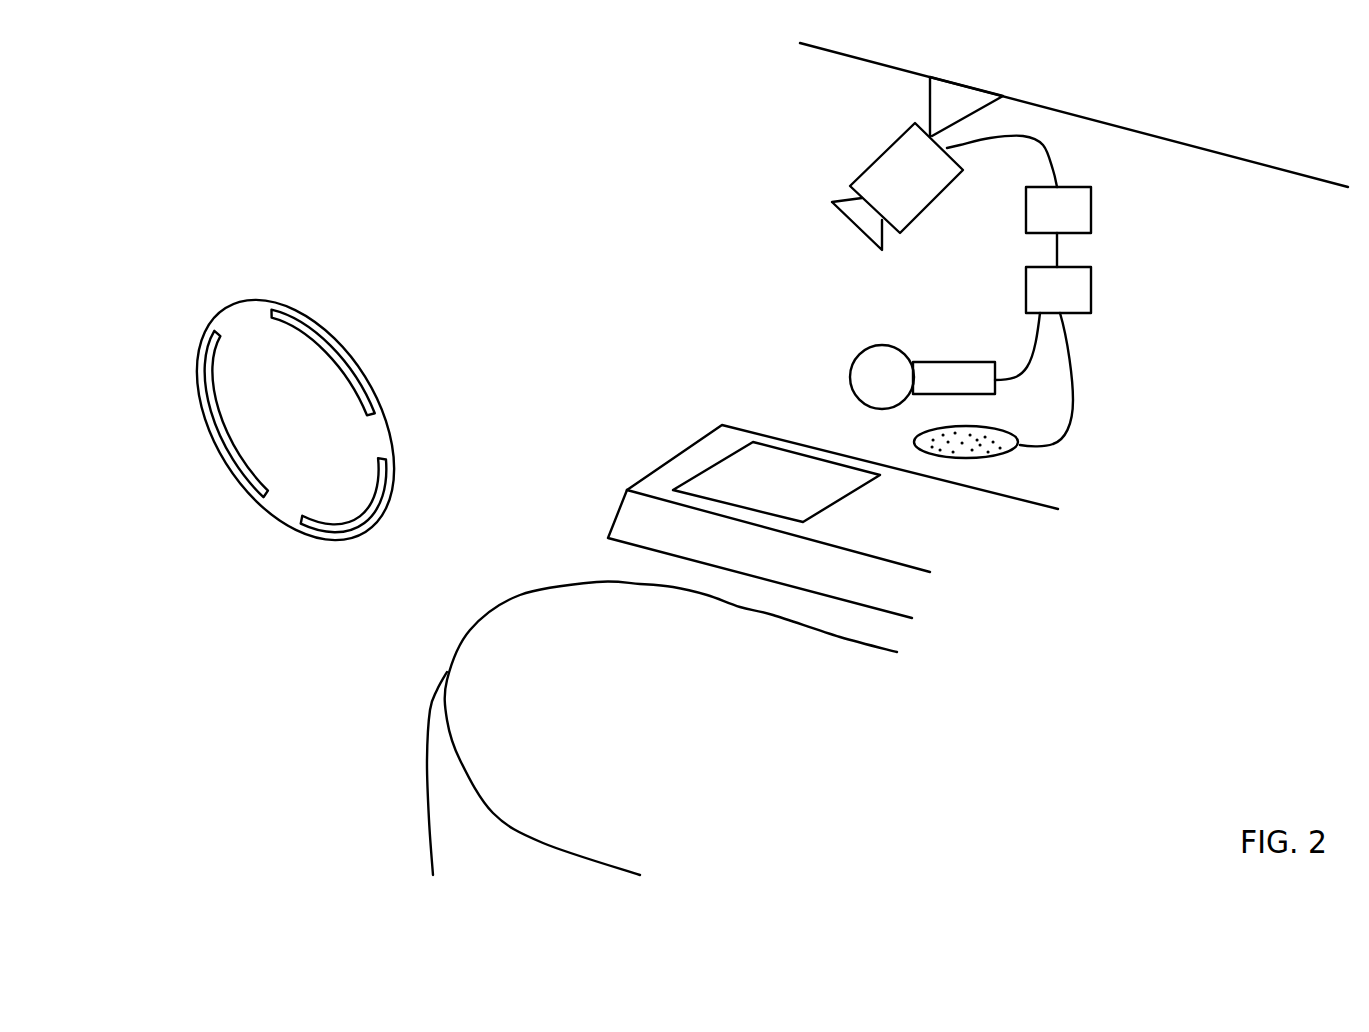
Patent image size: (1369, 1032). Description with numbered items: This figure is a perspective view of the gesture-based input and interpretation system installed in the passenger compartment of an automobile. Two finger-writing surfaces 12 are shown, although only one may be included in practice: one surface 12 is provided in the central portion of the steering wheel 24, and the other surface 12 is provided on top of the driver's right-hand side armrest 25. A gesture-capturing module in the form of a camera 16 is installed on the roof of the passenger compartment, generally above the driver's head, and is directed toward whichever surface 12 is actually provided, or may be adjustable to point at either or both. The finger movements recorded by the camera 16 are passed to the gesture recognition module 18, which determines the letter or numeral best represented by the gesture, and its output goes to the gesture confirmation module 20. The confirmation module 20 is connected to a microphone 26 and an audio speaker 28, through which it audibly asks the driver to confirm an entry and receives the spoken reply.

The surface 12 is at (753, 474).
The camera 16 is at (882, 170).
The gesture recognition module 18 is at (1058, 210).
The gesture confirmation module 20 is at (1058, 290).
The steering wheel 24 is at (257, 310).
The armrest 25 is at (945, 538).
The microphone 26 is at (943, 362).
The audio speaker 28 is at (1000, 457).